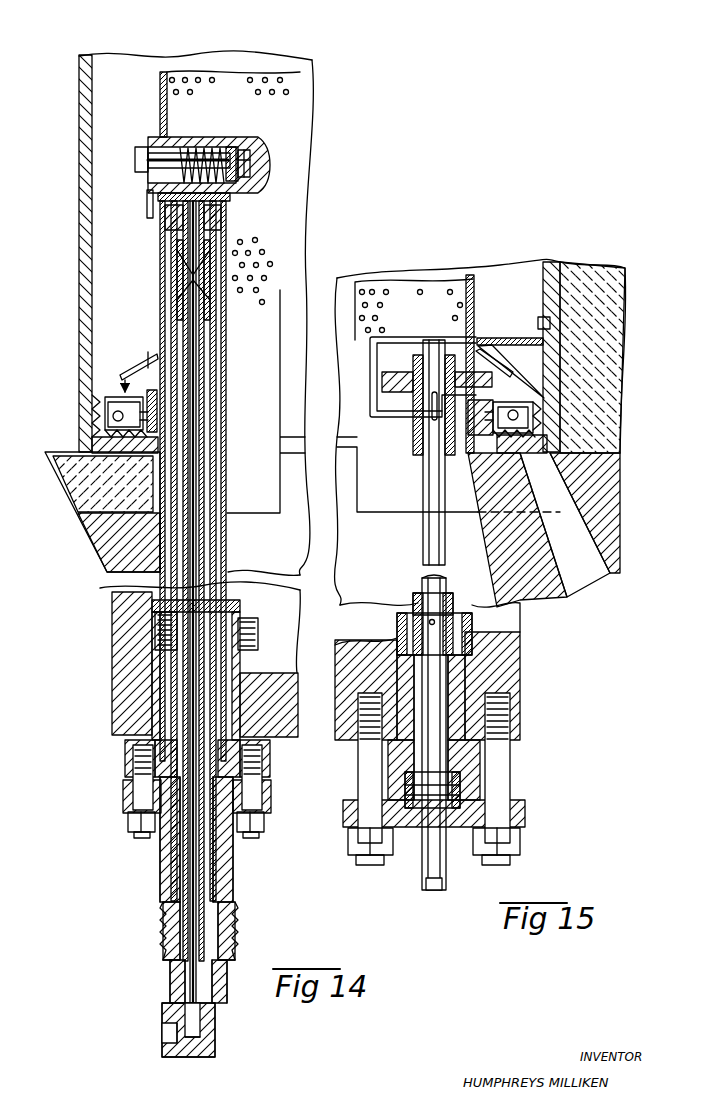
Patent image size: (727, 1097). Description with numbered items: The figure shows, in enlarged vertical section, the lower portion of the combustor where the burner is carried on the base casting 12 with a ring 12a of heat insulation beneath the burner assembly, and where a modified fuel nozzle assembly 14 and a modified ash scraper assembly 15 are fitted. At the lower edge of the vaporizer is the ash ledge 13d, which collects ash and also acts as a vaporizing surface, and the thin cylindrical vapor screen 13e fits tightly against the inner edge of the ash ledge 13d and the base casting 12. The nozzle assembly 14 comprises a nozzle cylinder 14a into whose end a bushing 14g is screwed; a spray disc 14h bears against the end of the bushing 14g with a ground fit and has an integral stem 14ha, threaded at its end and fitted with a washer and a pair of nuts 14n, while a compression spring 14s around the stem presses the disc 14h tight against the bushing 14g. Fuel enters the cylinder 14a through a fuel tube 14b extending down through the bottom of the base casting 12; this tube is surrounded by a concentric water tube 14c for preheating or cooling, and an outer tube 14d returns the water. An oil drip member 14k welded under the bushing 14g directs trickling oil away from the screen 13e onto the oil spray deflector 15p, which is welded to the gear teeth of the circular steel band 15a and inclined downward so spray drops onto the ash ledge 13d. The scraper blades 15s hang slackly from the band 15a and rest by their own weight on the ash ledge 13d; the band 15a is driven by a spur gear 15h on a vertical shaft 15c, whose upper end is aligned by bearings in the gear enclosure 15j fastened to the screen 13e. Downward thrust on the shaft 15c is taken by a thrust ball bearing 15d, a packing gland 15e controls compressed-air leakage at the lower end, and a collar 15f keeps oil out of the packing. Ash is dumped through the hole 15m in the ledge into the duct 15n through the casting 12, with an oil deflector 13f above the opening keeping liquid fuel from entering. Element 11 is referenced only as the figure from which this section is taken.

In FIG. 14, the frame wall 11 is at (92, 265).
In FIG. 15, the frame wall 11 is at (542, 276).
In FIG. 14, the base casting 12 is at (112, 604).
In FIG. 15, the base casting 12 is at (508, 648).
In FIG. 14, the ring of heat insulation 12a is at (85, 490).
In FIG. 14, the ash ledge 13d is at (92, 420).
In FIG. 15, the ash ledge 13d is at (520, 453).
In FIG. 14, the vapor screen 13e is at (272, 242).
In FIG. 15, the vapor screen 13e is at (468, 309).
In FIG. 15, the oil deflector 13f is at (513, 338).
In FIG. 14, the nozzle assembly 14 is at (183, 605).
In FIG. 14, the nozzle cylinder 14a is at (199, 140).
In FIG. 14, the fuel tube 14b is at (200, 368).
In FIG. 14, the water tube 14c is at (212, 393).
In FIG. 14, the outer concentric tube 14d is at (223, 430).
In FIG. 14, the bushing 14g is at (152, 138).
In FIG. 14, the spray disc 14h is at (138, 148).
In FIG. 14, the stem 14ha is at (212, 160).
In FIG. 14, the oil drip member 14k is at (147, 206).
In FIG. 14, the nuts 14n is at (242, 158).
In FIG. 14, the compression spring 14s is at (236, 194).
In FIG. 14, the ash scraper assembly 15 is at (123, 378).
In FIG. 15, the ash scraper assembly 15 is at (530, 390).
In FIG. 15, the circular steel band 15a is at (478, 440).
In FIG. 15, the vertical shaft 15c is at (430, 538).
In FIG. 15, the thrust ball bearing 15d is at (425, 795).
In FIG. 15, the packing gland 15e is at (405, 692).
In FIG. 15, the collar 15f is at (412, 620).
In FIG. 15, the spur gear 15h is at (497, 352).
In FIG. 15, the gear enclosure 15j is at (391, 338).
In FIG. 15, the hole 15m is at (512, 470).
In FIG. 15, the duct 15n is at (565, 565).
In FIG. 14, the oil spray deflector 15p is at (141, 365).
In FIG. 15, the oil spray deflector 15p is at (511, 371).
In FIG. 14, the scraper blades 15s is at (104, 396).